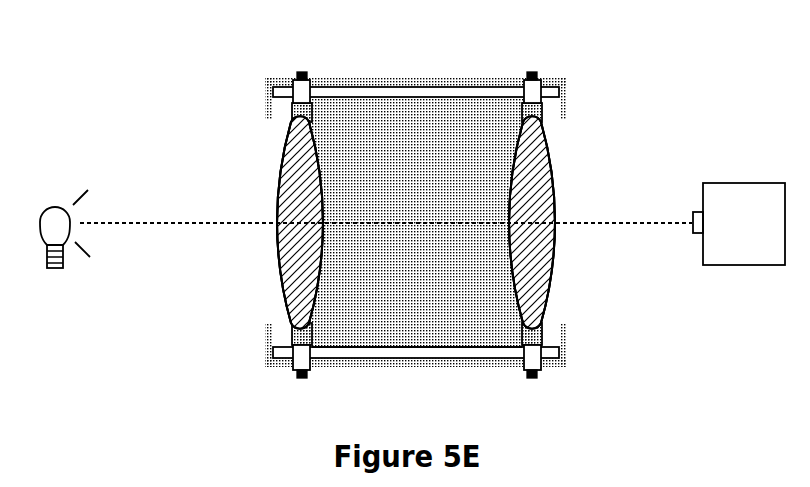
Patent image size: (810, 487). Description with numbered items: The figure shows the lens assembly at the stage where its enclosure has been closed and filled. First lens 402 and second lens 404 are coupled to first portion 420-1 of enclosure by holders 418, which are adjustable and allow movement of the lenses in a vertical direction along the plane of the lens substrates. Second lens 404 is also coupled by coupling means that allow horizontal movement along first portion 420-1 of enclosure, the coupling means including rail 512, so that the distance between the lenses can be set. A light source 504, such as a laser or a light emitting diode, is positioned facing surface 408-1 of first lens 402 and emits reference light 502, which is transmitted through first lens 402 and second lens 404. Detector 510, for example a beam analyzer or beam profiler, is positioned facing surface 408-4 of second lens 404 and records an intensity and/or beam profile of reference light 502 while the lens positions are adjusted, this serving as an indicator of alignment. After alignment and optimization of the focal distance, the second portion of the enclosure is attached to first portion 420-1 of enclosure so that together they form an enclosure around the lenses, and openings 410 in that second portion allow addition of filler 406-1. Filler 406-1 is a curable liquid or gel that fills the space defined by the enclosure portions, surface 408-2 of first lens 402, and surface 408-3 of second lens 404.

The first lens 402 is at (305, 155).
The second lens 404 is at (535, 160).
The filler 406-1 is at (398, 135).
The surface 408-1 is at (281, 180).
The surface 408-2 is at (326, 266).
The surface 408-3 is at (512, 188).
The surface 408-4 is at (555, 183).
The openings 410 is at (347, 54).
The holders 418 is at (294, 334).
The first portion of enclosure 420-1 is at (417, 363).
The reference light 502 is at (612, 226).
The light source 504 is at (62, 251).
The detector 510 is at (762, 232).
The rail 512 is at (483, 345).